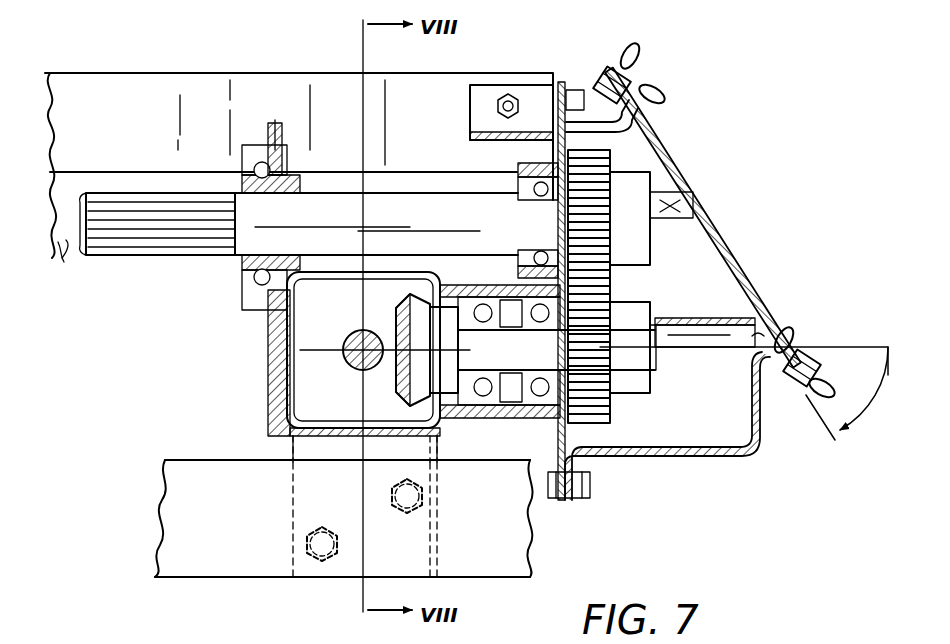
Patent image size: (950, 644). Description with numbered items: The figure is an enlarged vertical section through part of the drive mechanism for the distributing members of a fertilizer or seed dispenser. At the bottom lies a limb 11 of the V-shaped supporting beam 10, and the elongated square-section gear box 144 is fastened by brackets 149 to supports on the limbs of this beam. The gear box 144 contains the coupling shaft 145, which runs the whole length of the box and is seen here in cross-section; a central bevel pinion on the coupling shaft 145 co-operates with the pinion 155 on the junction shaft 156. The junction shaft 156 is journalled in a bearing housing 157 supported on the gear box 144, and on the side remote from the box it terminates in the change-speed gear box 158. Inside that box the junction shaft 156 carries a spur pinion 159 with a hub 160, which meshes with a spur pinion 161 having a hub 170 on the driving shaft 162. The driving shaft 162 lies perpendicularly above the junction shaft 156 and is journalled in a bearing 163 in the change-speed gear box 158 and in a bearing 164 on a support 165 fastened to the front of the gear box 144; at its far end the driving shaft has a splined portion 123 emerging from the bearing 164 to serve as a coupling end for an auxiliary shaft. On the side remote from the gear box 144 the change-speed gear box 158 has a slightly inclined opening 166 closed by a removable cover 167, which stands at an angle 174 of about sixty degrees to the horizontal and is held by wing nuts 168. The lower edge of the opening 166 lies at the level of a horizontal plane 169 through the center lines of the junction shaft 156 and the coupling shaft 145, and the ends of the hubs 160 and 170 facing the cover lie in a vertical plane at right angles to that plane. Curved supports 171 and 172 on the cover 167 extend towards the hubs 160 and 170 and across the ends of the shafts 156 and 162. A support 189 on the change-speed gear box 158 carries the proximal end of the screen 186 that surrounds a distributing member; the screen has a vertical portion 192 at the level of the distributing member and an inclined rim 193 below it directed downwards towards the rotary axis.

The screen 186 is at (108, 84).
The vertical portion 192 is at (215, 68).
The inclined rim 193 is at (62, 246).
The support 189 is at (489, 92).
The driving shaft 162 is at (405, 198).
The splined shaft end 123 is at (163, 246).
The bearing 164 is at (240, 264).
The support 165 is at (268, 312).
The gear box 144 is at (290, 430).
The coupling shaft 145 is at (345, 336).
The pinion 155 is at (395, 380).
The hub 160 is at (624, 418).
The junction shaft 156 is at (655, 356).
The bearing 163 is at (534, 201).
The spur pinion 161 is at (606, 154).
The hub 170 is at (650, 178).
The curved support 172 is at (690, 207).
The opening 166 is at (705, 288).
The curved support 171 is at (756, 332).
The removable cover 167 is at (724, 254).
The wing nuts 168 is at (652, 90).
The horizontal plane 169 is at (872, 346).
The angle 174 is at (855, 389).
The change-speed gear box 158 is at (698, 456).
The spur pinion 159 is at (592, 458).
The limb 11 is at (184, 470).
The supporting beam 10 is at (504, 574).
The bearing housing 157 is at (492, 414).
The brackets 149 is at (330, 486).